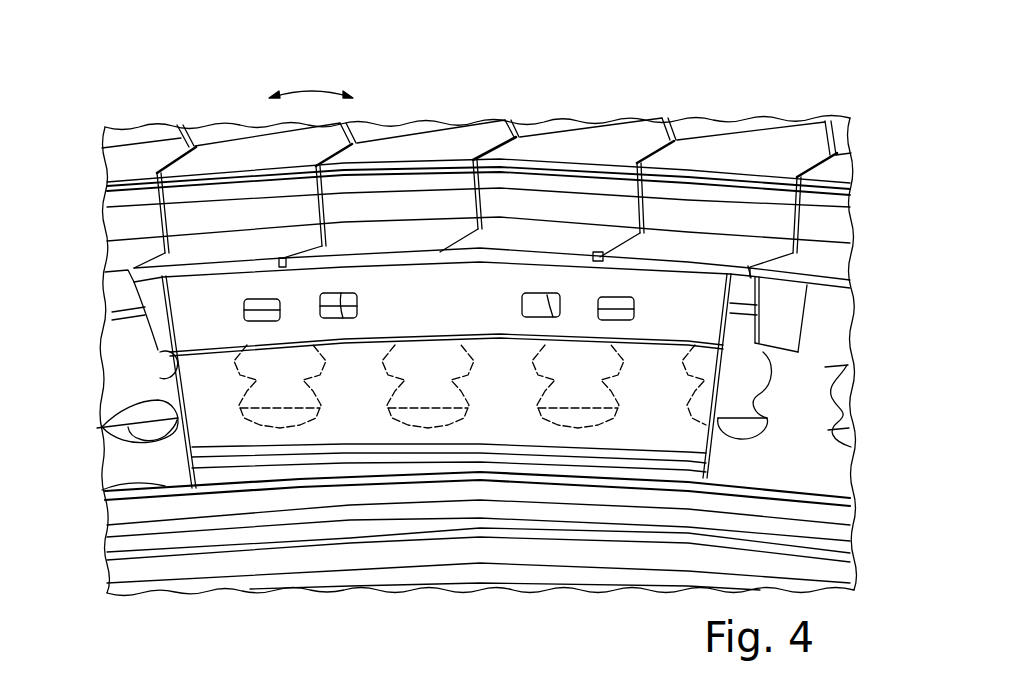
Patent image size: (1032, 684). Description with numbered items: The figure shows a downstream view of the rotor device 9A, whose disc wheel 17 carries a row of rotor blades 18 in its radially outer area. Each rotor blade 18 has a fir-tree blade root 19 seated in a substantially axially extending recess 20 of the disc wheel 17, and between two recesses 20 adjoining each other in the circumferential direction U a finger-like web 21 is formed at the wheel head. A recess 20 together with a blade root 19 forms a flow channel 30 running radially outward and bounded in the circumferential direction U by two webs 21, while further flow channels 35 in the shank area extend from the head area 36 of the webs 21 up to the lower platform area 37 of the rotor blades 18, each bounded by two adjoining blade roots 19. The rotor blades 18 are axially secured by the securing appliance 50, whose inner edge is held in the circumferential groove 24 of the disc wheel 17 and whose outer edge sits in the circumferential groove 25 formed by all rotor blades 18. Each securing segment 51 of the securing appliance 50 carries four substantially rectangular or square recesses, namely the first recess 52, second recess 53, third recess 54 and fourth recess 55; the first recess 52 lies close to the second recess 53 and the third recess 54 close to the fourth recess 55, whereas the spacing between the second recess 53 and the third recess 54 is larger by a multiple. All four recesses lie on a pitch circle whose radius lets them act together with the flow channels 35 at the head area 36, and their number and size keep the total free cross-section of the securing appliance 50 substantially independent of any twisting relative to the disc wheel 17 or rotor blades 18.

The rotor device 9A is at (87, 110).
The circumferential direction U is at (315, 90).
The disc wheel 17 is at (106, 540).
The rotor blades 18 is at (122, 226).
The blade root 19 is at (145, 390).
The recesses 20 is at (122, 445).
The finger-like web 21 is at (118, 435).
The circumferential groove 24 is at (108, 488).
The circumferential groove 25 is at (110, 293).
The flow channel 30 is at (280, 428).
The flow channels 35 is at (350, 293).
The head area 36 is at (828, 365).
The lower platform area 37 is at (796, 289).
The securing appliance 50 is at (623, 296).
The securing segment 51 is at (583, 295).
The first recess 52 is at (262, 298).
The second recess 53 is at (332, 293).
The third recess 54 is at (552, 293).
The fourth recess 55 is at (703, 260).